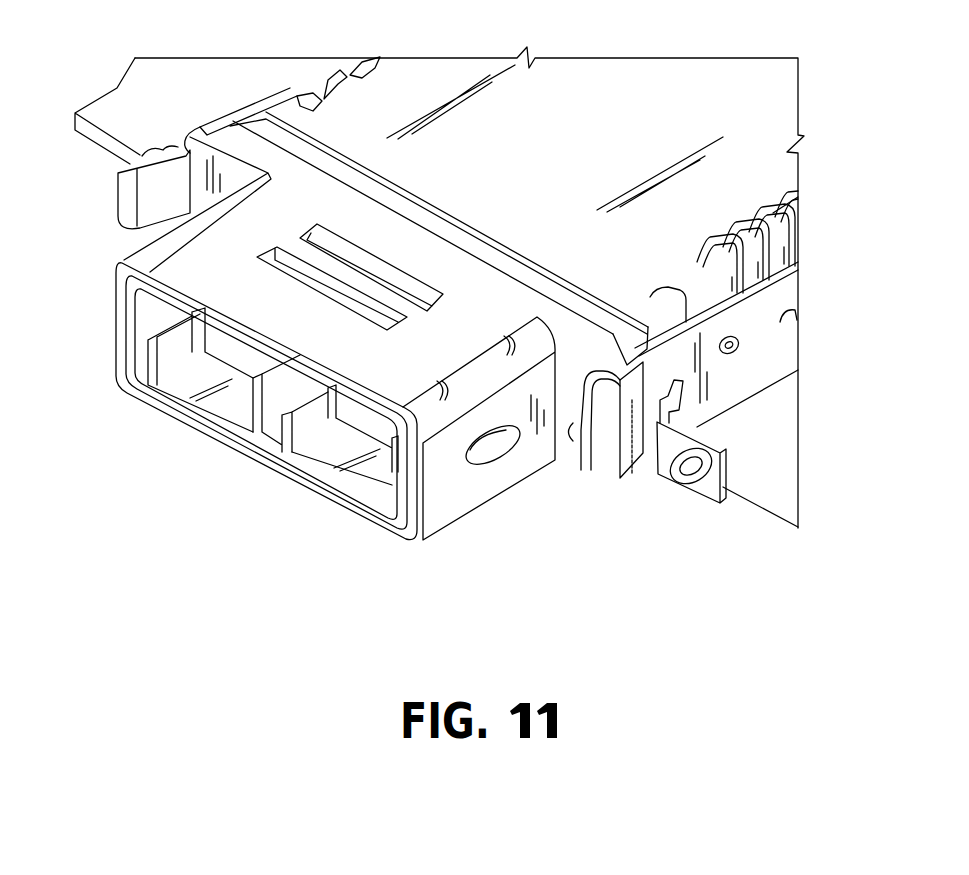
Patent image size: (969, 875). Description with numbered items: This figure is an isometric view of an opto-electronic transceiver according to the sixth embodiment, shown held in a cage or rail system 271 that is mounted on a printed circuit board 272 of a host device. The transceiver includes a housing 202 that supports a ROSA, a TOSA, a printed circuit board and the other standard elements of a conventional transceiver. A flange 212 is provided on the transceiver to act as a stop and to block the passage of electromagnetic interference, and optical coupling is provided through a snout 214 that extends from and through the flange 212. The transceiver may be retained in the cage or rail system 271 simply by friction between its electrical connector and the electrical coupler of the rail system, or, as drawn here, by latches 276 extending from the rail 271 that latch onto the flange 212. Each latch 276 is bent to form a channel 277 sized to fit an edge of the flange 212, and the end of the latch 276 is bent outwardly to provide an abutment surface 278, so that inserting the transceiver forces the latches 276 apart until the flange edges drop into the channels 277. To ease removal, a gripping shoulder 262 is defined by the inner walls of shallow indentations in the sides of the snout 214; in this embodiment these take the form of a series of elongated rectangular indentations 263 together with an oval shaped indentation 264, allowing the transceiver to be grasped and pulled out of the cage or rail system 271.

The housing 202 is at (587, 90).
The flange 212 is at (605, 468).
The snout 214 is at (410, 360).
The gripping shoulder 262 is at (443, 477).
The elongated rectangular indentations 263 is at (290, 234).
The oval shaped indentation 264 is at (480, 460).
The cage or rail system 271 is at (753, 372).
The printed circuit board 272 is at (770, 473).
The latch 276 is at (116, 201).
The channel 277 is at (632, 407).
The abutment surface 278 is at (150, 204).